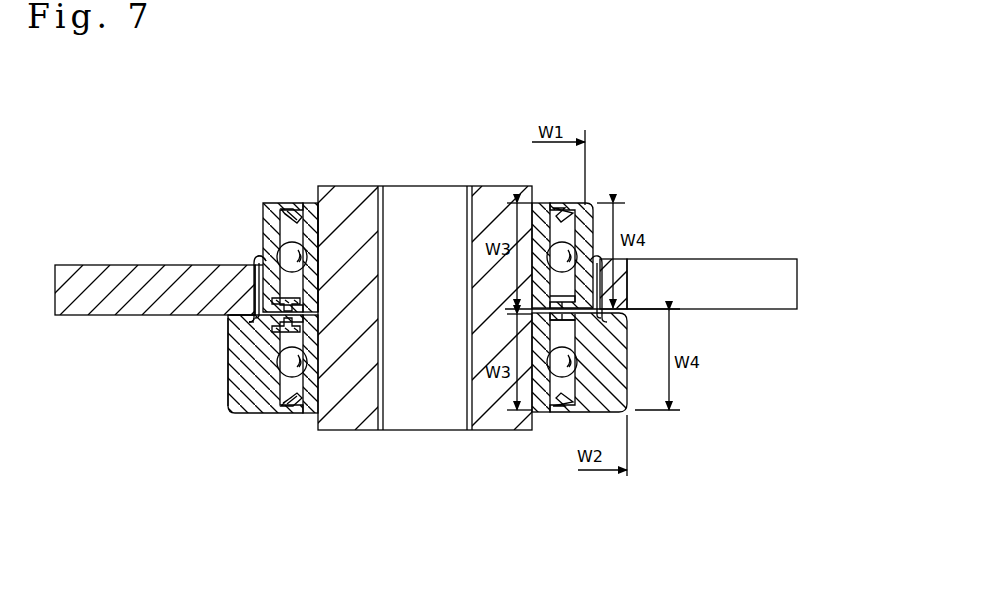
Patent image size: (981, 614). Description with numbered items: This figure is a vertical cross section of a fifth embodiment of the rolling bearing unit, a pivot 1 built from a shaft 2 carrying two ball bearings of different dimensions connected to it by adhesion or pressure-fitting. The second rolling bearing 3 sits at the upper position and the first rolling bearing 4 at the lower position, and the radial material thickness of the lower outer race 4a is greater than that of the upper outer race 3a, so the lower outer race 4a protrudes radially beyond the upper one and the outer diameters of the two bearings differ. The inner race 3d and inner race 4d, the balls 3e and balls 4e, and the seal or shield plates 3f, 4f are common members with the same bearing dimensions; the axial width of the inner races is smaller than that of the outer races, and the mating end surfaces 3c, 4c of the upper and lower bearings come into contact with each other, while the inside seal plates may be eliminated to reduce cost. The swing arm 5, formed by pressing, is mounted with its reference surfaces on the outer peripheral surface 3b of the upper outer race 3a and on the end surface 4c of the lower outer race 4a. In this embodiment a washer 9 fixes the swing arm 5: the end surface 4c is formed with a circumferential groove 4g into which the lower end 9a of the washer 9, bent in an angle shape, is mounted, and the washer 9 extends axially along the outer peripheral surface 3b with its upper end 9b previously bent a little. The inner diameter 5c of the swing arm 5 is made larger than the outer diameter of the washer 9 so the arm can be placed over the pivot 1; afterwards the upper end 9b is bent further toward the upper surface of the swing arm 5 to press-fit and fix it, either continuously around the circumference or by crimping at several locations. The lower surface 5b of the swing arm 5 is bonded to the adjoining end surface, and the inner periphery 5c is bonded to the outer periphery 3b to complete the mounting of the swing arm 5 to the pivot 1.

The pivot 1 is at (362, 184).
The shaft 2 is at (345, 190).
The second rolling bearing 3 is at (347, 219).
The outer race 3a is at (266, 222).
The outer peripheral surface 3b is at (252, 282).
The mating end surface 3c is at (253, 321).
The inner race 3d is at (318, 222).
The ball 3e is at (273, 212).
The seal or shield plate 3f is at (292, 208).
The first rolling bearing 4 is at (367, 394).
The outer race 4a is at (235, 414).
The end surface 4c is at (245, 307).
The inner race 4d is at (322, 385).
The ball 4e is at (285, 375).
The seal or shield plate 4f is at (294, 404).
The circumferential groove 4g is at (227, 367).
The swing arm 5 is at (98, 268).
The lower surface 5b is at (232, 320).
The inner diameter 5c is at (250, 265).
The washer 9 is at (258, 257).
The lower end 9a is at (245, 323).
The upper end 9b is at (256, 259).